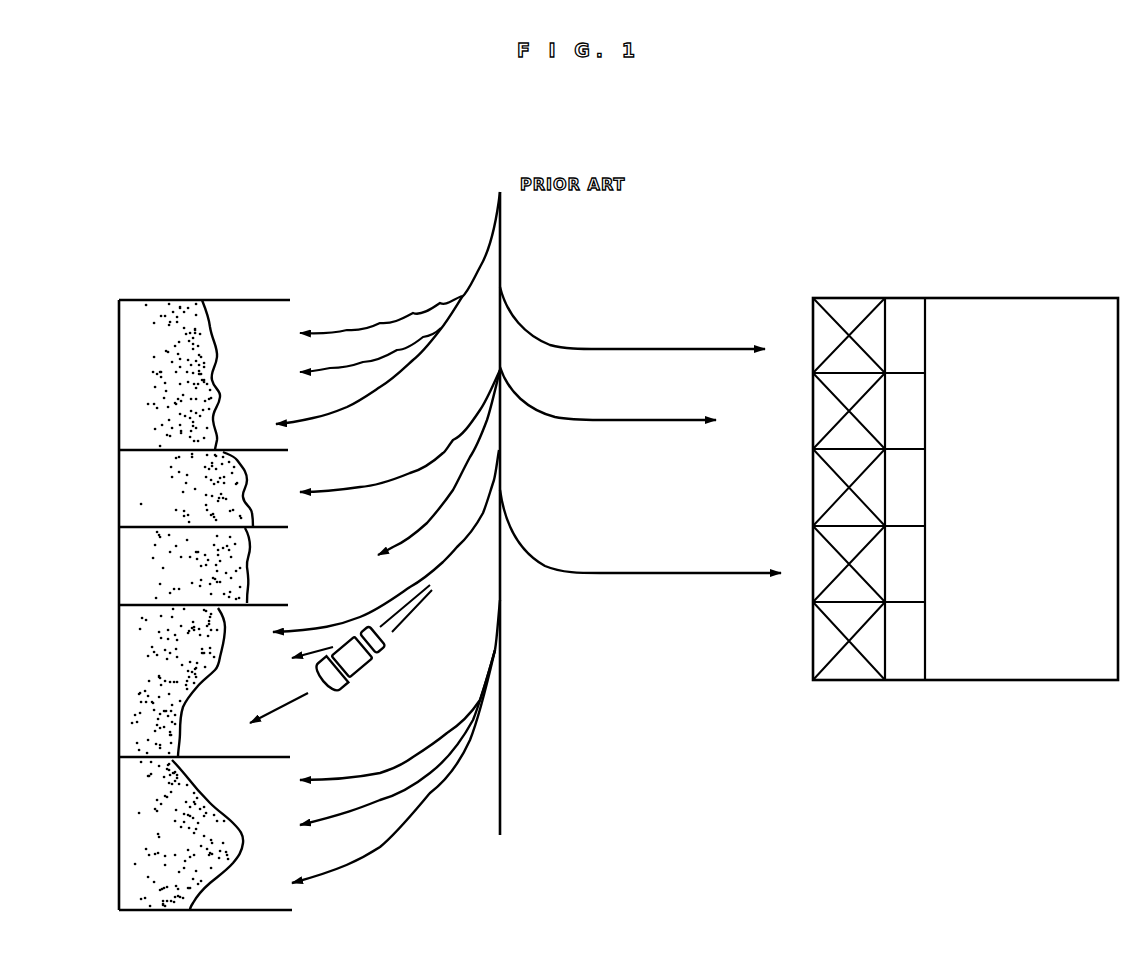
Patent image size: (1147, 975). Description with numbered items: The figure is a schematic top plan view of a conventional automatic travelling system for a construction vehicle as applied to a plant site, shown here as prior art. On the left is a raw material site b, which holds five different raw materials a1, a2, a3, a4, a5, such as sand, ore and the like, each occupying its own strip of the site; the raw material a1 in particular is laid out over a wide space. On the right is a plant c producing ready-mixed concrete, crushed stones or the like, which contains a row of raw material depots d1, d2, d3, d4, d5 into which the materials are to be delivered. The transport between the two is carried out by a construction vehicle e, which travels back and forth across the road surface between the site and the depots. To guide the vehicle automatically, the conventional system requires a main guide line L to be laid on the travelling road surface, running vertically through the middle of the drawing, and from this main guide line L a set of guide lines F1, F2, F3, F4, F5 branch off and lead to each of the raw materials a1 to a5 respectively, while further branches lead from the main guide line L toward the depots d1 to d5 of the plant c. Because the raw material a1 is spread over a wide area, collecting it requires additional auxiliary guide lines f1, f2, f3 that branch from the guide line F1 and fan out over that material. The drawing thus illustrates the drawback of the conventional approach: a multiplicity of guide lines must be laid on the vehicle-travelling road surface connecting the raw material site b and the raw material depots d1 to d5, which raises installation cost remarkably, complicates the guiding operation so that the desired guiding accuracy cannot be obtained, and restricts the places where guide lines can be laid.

The raw material a1 is at (213, 378).
The raw material a2 is at (244, 487).
The raw material a3 is at (234, 573).
The raw material a4 is at (197, 677).
The raw material a5 is at (210, 812).
The raw material site b is at (116, 601).
The plant c is at (979, 290).
The raw material depot d1 is at (820, 338).
The raw material depot d2 is at (820, 408).
The raw material depot d3 is at (820, 503).
The raw material depot d4 is at (822, 555).
The raw material depot d5 is at (822, 640).
The construction vehicle e is at (370, 670).
The auxiliary guide line f1 is at (347, 329).
The auxiliary guide line f2 is at (362, 363).
The auxiliary guide line f3 is at (352, 407).
The guide line F1 is at (480, 268).
The guide line F2 is at (480, 410).
The guide line F3 is at (442, 508).
The guide line F4 is at (460, 548).
The guide line F5 is at (492, 650).
The main guide line L is at (504, 806).